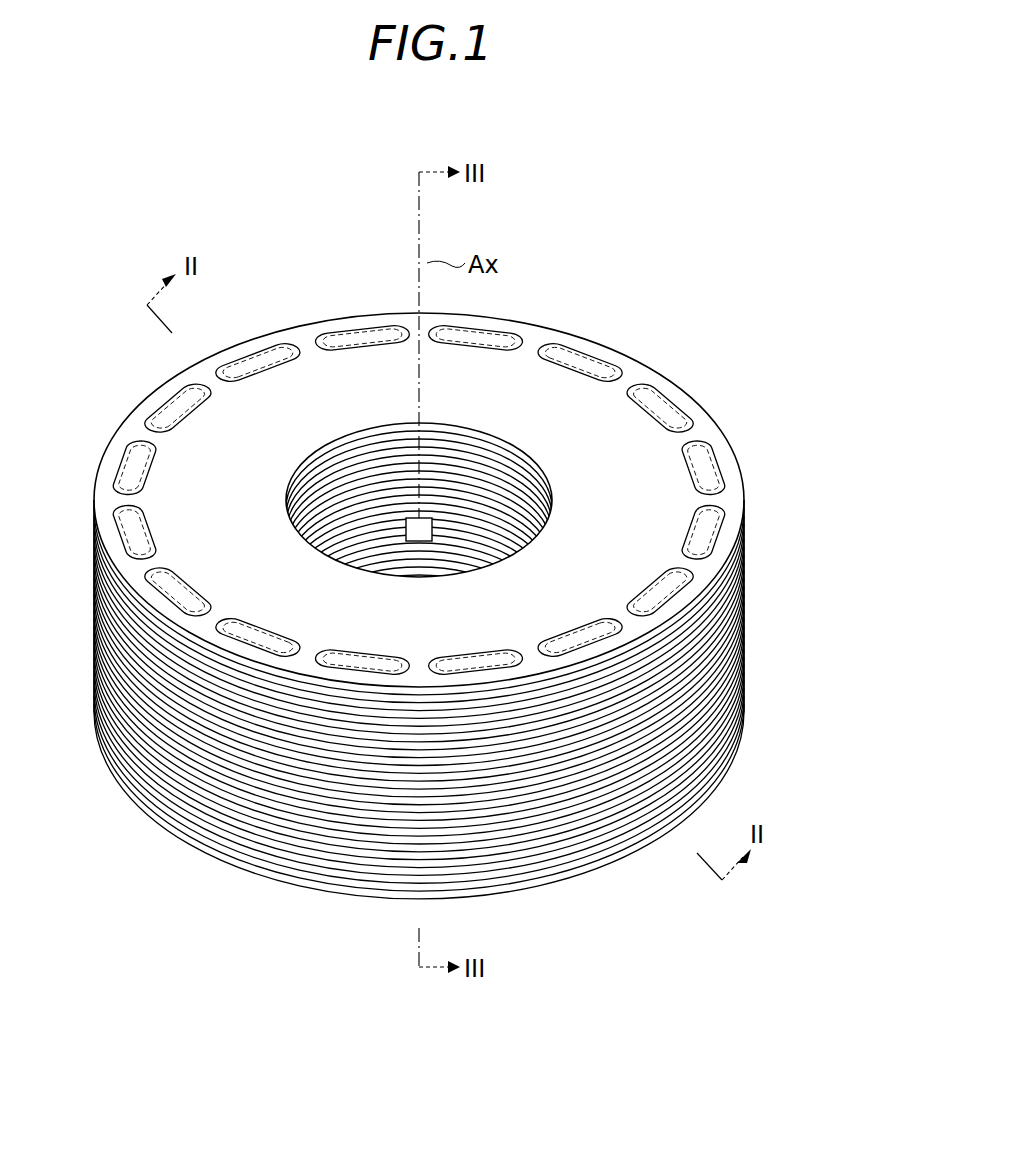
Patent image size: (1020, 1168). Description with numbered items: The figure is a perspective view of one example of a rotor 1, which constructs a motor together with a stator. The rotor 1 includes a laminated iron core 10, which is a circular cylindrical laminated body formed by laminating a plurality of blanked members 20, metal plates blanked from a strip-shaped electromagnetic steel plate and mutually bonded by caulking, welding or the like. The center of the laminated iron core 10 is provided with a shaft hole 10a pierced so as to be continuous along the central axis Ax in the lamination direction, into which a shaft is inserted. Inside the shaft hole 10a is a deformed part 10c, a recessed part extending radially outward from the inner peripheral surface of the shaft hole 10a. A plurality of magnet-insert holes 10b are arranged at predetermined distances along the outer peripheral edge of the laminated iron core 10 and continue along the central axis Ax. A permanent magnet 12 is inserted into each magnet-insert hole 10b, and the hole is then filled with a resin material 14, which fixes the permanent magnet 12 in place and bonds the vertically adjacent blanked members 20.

The rotor 1 is at (665, 316).
The laminated iron core 10 is at (176, 875).
The shaft hole 10a is at (508, 500).
The magnet-insert hole 10b is at (168, 398).
The deformed part 10c is at (410, 518).
The permanent magnet 12 is at (661, 390).
The resin material 14 is at (550, 336).
The blanked member 20 is at (744, 688).